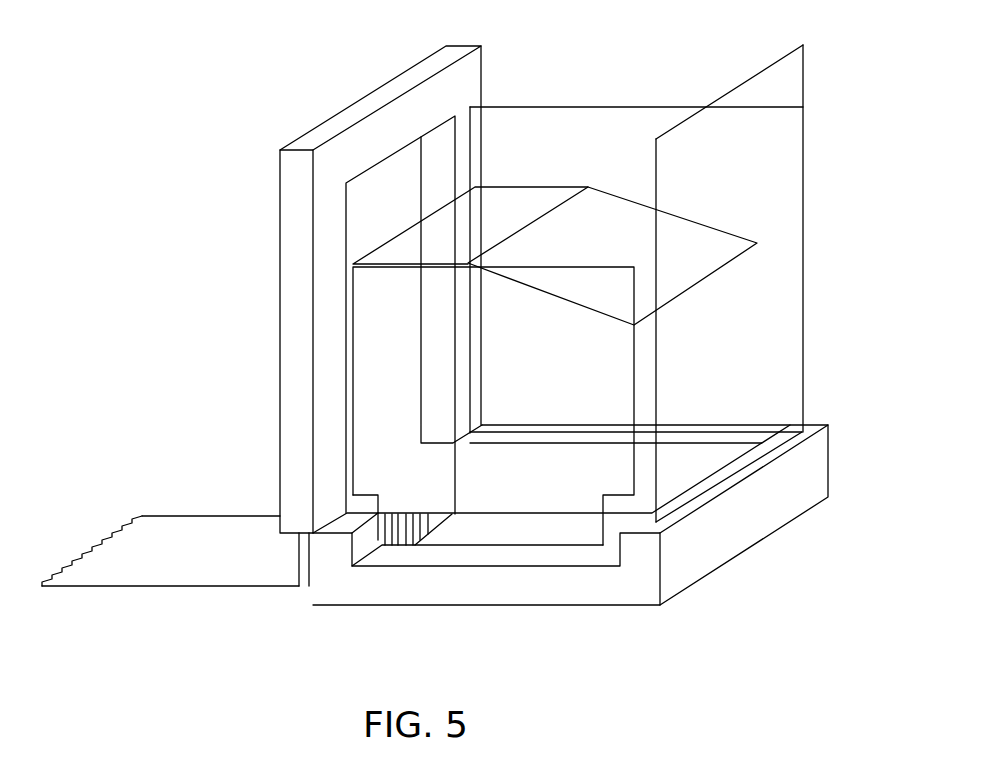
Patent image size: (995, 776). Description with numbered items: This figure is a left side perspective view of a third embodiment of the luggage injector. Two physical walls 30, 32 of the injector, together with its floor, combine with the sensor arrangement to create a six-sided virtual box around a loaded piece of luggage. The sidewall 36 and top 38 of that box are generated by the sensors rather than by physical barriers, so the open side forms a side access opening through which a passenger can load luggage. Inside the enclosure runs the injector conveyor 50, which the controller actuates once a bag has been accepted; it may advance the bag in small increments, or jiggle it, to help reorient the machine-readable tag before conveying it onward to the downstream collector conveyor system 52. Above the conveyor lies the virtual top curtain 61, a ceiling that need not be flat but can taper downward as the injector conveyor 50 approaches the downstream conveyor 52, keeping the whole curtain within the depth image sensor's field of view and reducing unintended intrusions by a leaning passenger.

The wall 30 is at (647, 130).
The wall 32 is at (773, 312).
The sidewall 36 is at (432, 470).
The top 38 is at (433, 252).
The injector conveyor 50 is at (608, 543).
The downstream collector conveyor system 52 is at (171, 533).
The virtual top curtain 61 is at (520, 203).